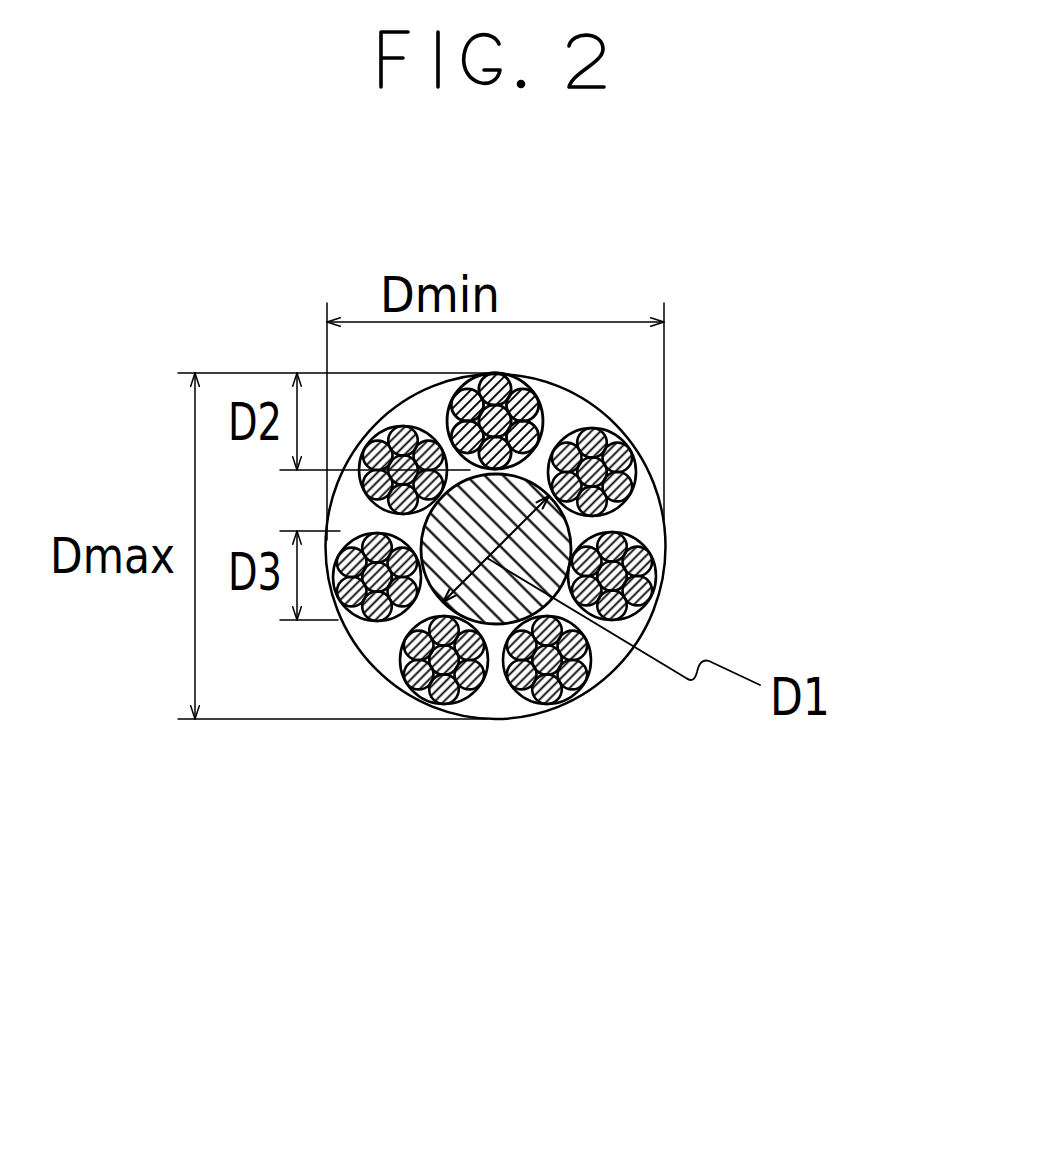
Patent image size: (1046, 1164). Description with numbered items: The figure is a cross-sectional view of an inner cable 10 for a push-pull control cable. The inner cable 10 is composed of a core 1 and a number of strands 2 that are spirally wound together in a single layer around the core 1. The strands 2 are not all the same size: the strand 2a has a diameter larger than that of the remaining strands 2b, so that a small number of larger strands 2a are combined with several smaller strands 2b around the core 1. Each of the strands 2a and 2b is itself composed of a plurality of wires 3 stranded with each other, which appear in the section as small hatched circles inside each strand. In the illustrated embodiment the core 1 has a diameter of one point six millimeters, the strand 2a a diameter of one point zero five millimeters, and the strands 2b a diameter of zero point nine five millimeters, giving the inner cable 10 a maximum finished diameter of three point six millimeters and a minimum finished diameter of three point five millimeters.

The core 1 is at (535, 532).
The strands 2 is at (532, 581).
The larger-diameter strand 2a is at (541, 380).
The smaller-diameter strand 2b is at (368, 440).
The wires 3 is at (498, 377).
The inner cable 10 is at (182, 777).